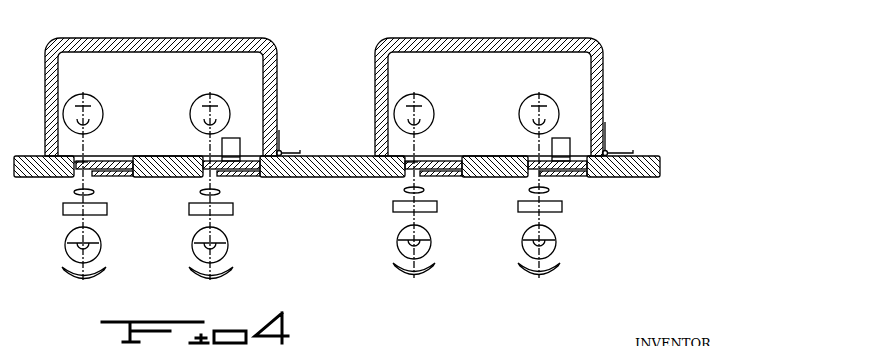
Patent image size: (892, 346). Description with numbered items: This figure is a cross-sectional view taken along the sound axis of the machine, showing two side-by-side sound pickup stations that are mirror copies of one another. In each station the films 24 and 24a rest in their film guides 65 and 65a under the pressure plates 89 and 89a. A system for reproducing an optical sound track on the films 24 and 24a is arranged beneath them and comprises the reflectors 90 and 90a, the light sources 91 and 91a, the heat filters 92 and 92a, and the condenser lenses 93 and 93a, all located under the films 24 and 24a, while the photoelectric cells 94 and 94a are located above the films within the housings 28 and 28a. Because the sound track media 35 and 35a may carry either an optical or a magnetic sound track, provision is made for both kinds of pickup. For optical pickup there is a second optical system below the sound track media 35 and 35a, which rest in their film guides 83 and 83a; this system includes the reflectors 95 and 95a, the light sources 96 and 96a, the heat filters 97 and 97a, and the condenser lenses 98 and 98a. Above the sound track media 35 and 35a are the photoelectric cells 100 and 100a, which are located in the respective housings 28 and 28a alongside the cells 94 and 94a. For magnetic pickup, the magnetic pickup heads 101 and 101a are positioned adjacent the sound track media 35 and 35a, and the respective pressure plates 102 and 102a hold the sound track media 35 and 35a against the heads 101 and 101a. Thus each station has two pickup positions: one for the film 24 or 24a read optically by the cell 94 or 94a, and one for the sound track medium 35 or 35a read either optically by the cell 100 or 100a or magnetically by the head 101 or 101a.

The housing 28 is at (276, 58).
The housing 28a is at (604, 58).
The photoelectric cell 94 is at (97, 102).
The photoelectric cell 94a is at (428, 100).
The photoelectric cell 100 is at (224, 102).
The photoelectric cell 100a is at (552, 100).
The magnetic pickup head 101 is at (231, 138).
The magnetic pickup head 101a is at (555, 138).
The pressure plate 89 is at (86, 161).
The pressure plate 89a is at (423, 161).
The film 24 is at (114, 162).
The film 24a is at (458, 162).
The sound track medium 35 is at (206, 160).
The sound track medium 35a is at (545, 160).
The condenser lens 93 is at (94, 192).
The condenser lens 93a is at (404, 190).
The film guide 65 is at (127, 175).
The film guide 65a is at (447, 175).
The condenser lens 98 is at (201, 192).
The condenser lens 98a is at (529, 190).
The pressure plate 102 is at (229, 175).
The pressure plate 102a is at (550, 175).
The film guide 83 is at (258, 177).
The film guide 83a is at (586, 176).
The heat filter 92 is at (106, 213).
The heat filter 92a is at (436, 211).
The heat filter 97 is at (232, 213).
The heat filter 97a is at (561, 211).
The light source 91 is at (101, 246).
The light source 91a is at (426, 231).
The light source 96 is at (224, 235).
The light source 96a is at (551, 231).
The reflector 90 is at (104, 269).
The reflector 90a is at (434, 264).
The reflector 95 is at (231, 269).
The reflector 95a is at (559, 264).